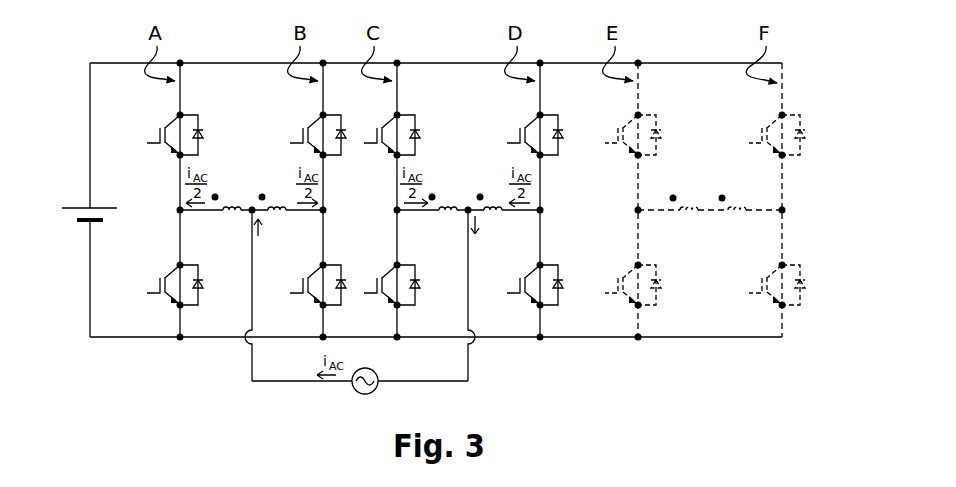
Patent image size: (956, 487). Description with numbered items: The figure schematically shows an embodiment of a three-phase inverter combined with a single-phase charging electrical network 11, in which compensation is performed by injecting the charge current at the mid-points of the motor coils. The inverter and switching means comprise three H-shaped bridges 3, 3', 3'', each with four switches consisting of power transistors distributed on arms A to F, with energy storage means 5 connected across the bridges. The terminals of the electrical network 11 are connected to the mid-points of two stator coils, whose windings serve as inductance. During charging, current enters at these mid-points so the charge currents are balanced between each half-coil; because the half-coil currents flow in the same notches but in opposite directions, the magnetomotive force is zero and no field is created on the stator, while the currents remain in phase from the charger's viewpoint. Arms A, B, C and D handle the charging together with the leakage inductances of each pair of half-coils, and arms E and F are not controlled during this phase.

The H-shaped bridge 3 is at (251, 176).
The H-shaped bridge 3' is at (468, 178).
The H-shaped bridge 3'' is at (710, 176).
The energy storage means 5 is at (78, 207).
The single-phase electrical network 11 is at (371, 393).